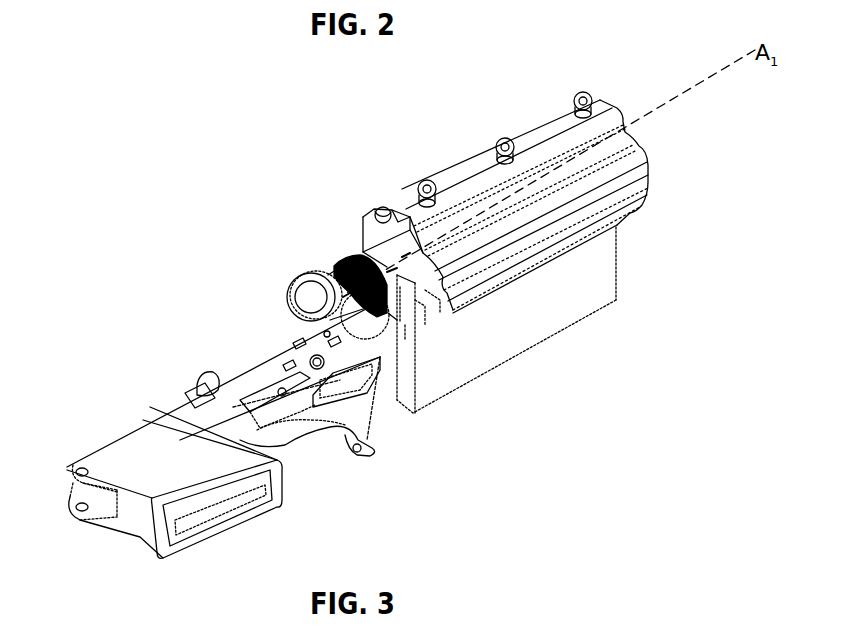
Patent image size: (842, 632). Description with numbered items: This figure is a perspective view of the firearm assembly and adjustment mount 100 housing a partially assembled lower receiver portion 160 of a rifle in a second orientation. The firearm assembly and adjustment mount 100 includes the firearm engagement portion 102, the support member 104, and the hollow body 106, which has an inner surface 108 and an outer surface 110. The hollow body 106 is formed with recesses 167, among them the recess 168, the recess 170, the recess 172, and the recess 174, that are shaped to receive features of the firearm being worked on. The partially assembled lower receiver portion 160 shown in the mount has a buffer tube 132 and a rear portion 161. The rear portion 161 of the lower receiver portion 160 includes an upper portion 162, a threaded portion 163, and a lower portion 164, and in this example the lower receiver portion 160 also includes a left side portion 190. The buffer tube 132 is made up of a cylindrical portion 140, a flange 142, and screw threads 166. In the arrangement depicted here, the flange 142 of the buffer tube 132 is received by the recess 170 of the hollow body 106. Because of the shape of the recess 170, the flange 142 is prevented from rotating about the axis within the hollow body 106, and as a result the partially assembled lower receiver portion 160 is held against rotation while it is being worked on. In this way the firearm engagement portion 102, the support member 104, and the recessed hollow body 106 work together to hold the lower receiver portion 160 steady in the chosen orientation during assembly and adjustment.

The firearm assembly and adjustment mount 100 is at (501, 92).
The firearm engagement portion 102 is at (561, 131).
The support member 104 is at (590, 300).
The hollow body 106 is at (364, 222).
The inner surface 108 is at (407, 230).
The outer surface 110 is at (637, 193).
The buffer tube 132 is at (395, 278).
The cylindrical portion 140 is at (403, 266).
The flange 142 is at (430, 293).
The lower receiver portion 160 is at (134, 352).
The rear portion 161 is at (287, 447).
The upper portion 162 is at (233, 377).
The threaded portion 163 is at (292, 302).
The lower portion 164 is at (280, 510).
The screw threads 166 is at (338, 266).
The recesses 167 is at (397, 262).
The recess 168 is at (396, 222).
The recess 170 is at (423, 284).
The recess 172 is at (420, 292).
The recess 174 is at (373, 243).
The left side portion 190 is at (130, 453).